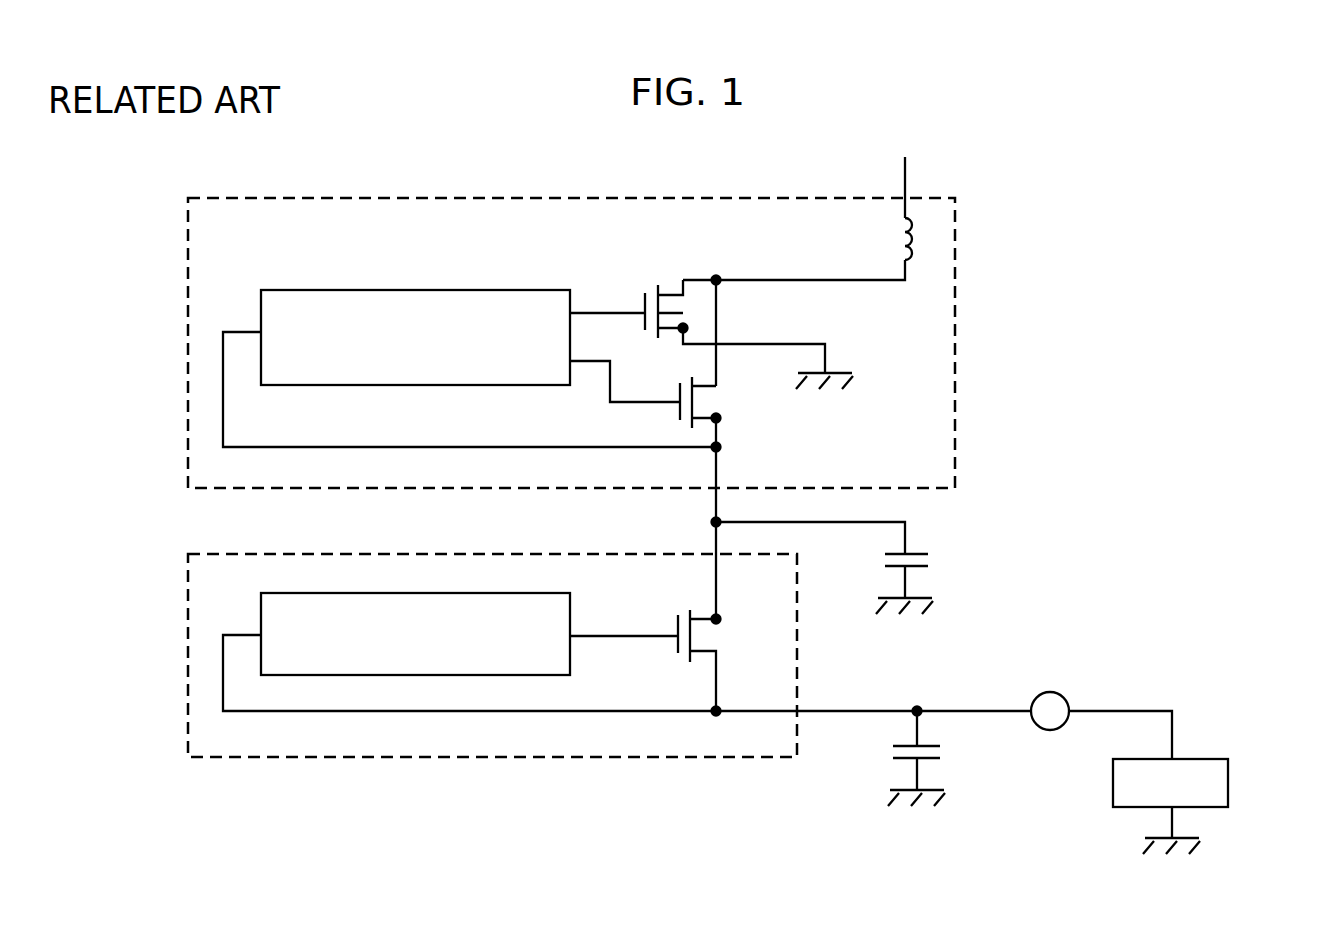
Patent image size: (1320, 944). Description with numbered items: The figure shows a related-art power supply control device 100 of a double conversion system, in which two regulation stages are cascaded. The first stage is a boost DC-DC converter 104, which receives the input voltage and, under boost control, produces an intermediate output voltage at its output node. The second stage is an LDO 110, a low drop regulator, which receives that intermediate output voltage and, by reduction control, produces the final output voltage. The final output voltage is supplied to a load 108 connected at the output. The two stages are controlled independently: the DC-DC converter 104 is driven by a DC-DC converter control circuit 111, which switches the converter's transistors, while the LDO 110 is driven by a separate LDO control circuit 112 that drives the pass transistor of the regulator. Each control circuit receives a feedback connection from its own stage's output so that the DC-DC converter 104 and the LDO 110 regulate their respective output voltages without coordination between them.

The power supply control device 100 is at (1028, 164).
The DC-DC converter 104 is at (188, 316).
The load 108 is at (1228, 768).
The LDO 110 is at (188, 637).
The DC-DC converter control circuit 111 is at (447, 290).
The LDO control circuit 112 is at (537, 675).